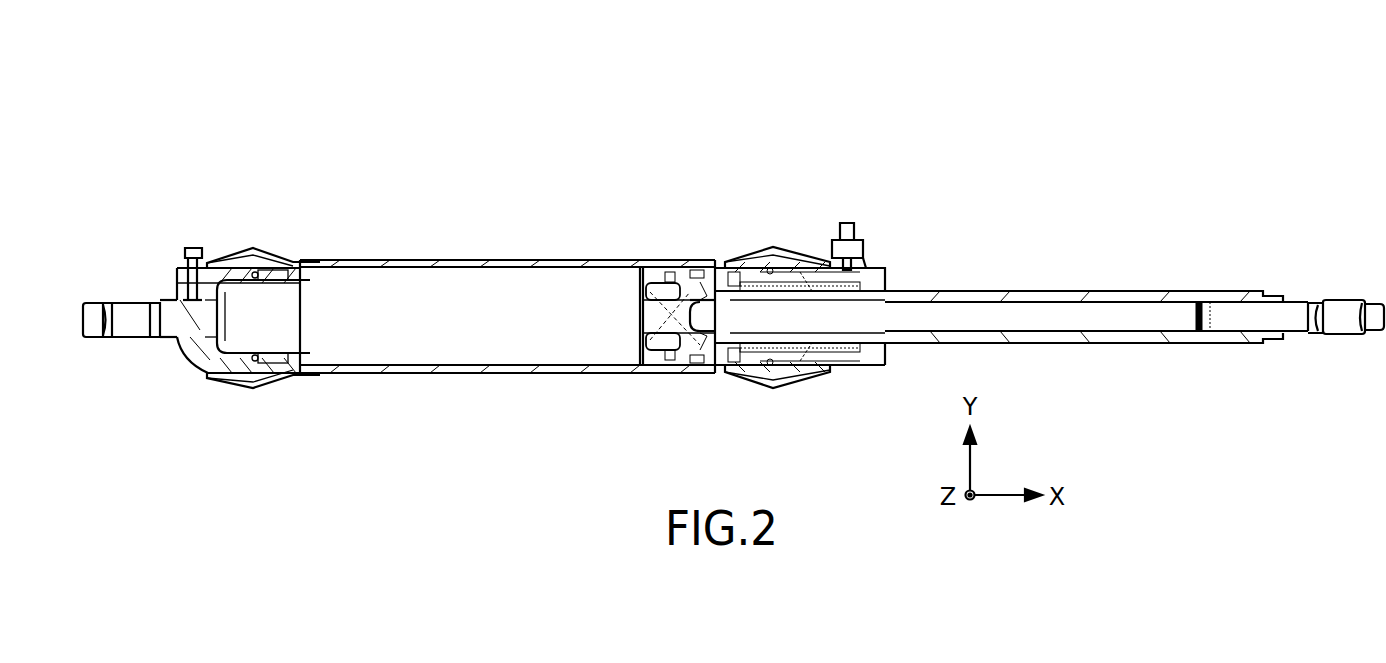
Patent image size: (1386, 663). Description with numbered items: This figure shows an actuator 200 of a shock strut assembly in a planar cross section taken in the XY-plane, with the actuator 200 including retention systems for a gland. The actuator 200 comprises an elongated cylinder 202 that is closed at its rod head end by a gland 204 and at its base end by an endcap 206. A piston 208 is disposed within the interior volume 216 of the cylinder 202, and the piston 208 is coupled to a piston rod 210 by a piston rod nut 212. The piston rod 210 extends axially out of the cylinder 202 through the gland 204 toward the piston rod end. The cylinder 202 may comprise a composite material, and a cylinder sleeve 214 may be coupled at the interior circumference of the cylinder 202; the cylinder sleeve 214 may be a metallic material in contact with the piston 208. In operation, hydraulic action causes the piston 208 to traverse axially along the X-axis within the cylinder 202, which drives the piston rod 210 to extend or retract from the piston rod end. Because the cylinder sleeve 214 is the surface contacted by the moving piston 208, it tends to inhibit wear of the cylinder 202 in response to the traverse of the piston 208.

The actuator 200 is at (932, 95).
The cylinder 202 is at (478, 262).
The gland 204 is at (905, 230).
The endcap 206 is at (160, 243).
The piston 208 is at (676, 265).
The piston rod 210 is at (990, 290).
The piston rod nut 212 is at (647, 290).
The cylinder sleeve 214 is at (433, 350).
The interior volume 216 is at (470, 316).